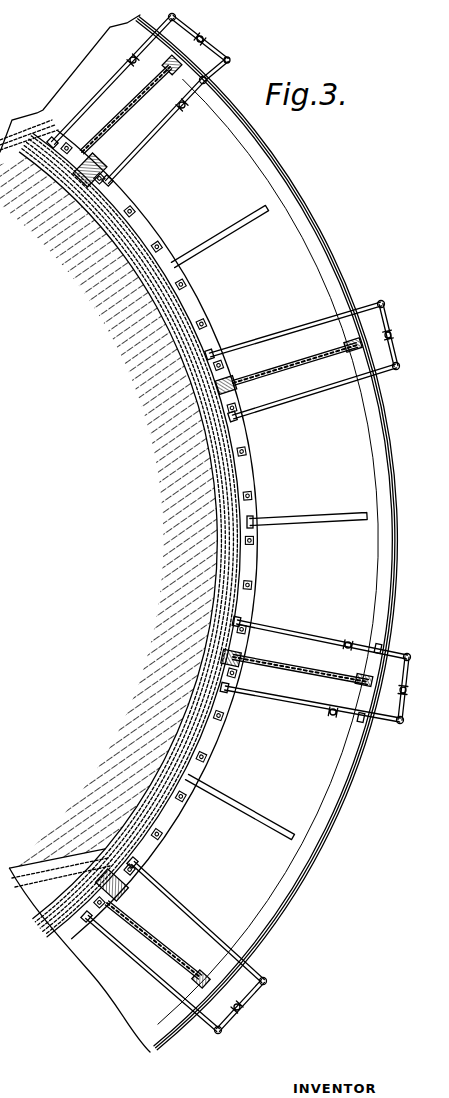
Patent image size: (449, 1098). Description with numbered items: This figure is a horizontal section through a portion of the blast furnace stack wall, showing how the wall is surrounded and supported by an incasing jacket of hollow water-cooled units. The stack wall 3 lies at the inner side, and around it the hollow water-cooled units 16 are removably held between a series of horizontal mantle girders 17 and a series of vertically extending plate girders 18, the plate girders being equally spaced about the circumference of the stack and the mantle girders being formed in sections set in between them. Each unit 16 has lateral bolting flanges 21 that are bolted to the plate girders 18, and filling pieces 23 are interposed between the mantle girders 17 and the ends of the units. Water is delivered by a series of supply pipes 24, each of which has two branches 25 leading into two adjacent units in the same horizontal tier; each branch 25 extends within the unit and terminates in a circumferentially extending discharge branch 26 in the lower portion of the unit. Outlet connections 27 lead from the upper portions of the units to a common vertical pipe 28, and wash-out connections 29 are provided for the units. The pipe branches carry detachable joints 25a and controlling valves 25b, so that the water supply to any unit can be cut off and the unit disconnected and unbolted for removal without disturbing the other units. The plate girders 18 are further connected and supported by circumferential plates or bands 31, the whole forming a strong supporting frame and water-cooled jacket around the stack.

The stack wall 3 is at (173, 573).
The hollow water-cooled unit 16 is at (240, 527).
The mantle girder 17 is at (158, 535).
The plate girder 18 is at (127, 121).
The lateral bolting flange 21 is at (100, 163).
The filling piece 23 is at (93, 157).
The supply pipe 24 is at (205, 37).
The branch 25 is at (163, 137).
The detachable joint 25a is at (358, 727).
The controlling valve 25b is at (328, 730).
The discharge branch 26 is at (157, 330).
The outlet connection 27 is at (350, 387).
The common vertical pipe 28 is at (390, 333).
The wash-out connection 29 is at (253, 218).
The circumferential plate or band 31 is at (395, 527).